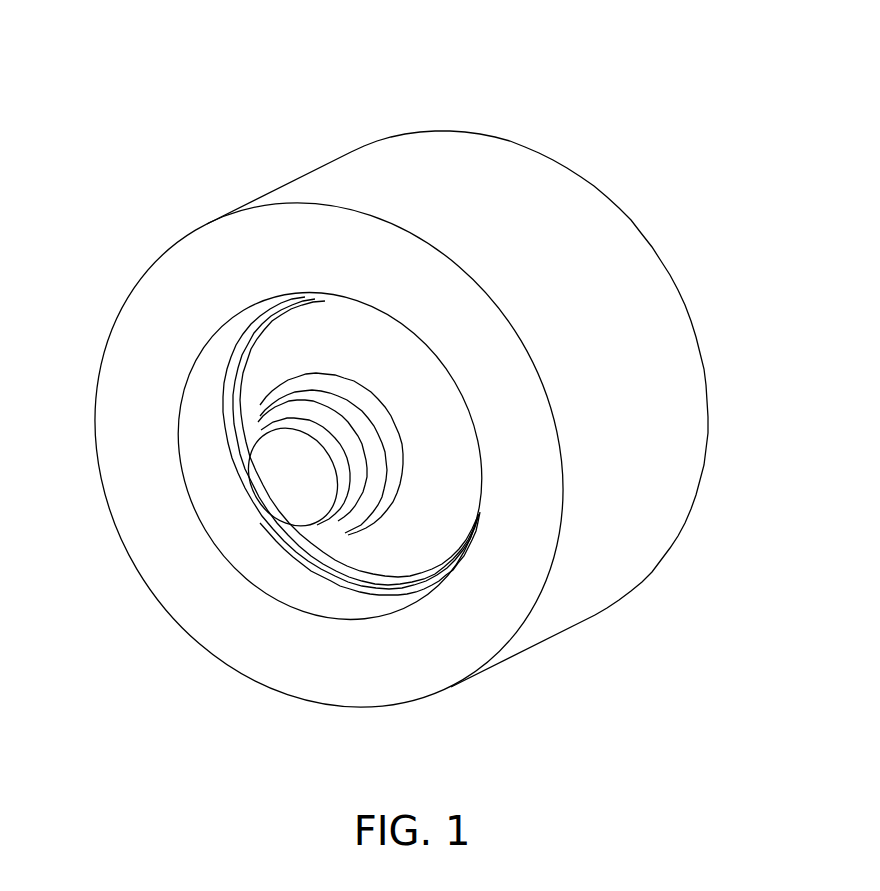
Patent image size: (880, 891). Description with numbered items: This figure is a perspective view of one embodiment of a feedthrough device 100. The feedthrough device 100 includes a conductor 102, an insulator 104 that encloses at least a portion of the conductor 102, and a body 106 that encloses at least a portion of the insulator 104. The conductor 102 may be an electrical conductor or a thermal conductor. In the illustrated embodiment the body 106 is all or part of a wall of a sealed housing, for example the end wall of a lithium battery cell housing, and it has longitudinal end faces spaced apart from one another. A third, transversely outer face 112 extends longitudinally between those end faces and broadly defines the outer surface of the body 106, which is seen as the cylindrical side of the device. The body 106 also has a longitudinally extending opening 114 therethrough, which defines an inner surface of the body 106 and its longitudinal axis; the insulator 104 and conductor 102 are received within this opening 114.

The feedthrough device 100 is at (165, 69).
The conductor 102 is at (290, 472).
The insulator 104 is at (265, 422).
The body 106 is at (137, 327).
The third face 112 is at (647, 493).
The opening 114 is at (330, 388).